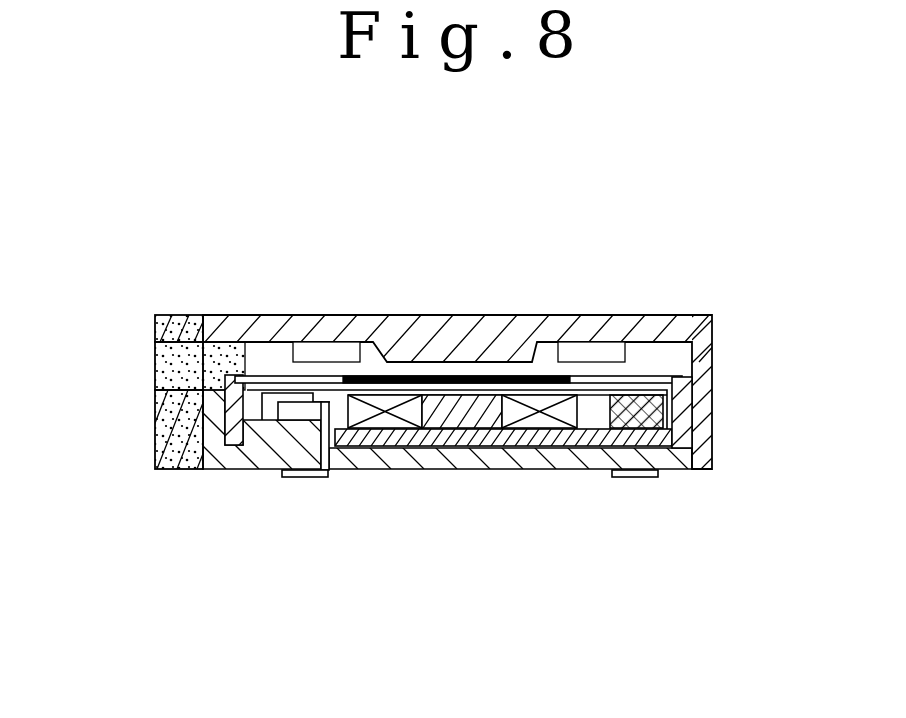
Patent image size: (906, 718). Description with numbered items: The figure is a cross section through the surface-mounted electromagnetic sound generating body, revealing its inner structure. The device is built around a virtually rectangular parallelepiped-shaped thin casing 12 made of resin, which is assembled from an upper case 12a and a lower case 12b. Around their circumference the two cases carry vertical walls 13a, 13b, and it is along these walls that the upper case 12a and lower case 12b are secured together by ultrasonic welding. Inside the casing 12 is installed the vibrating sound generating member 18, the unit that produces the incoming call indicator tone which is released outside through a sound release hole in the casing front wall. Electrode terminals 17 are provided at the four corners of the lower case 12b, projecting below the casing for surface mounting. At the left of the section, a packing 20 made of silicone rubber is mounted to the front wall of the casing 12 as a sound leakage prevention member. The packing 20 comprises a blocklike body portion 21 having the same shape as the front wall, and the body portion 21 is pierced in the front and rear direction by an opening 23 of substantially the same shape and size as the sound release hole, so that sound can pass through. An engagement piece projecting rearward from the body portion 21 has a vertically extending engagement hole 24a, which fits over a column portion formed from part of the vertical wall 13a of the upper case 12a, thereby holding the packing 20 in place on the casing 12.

The casing 12 is at (391, 387).
The upper case 12a is at (560, 316).
The lower case 12b is at (497, 472).
The vertical wall 13a is at (713, 366).
The vertical wall 13b is at (713, 436).
The electrode terminal 17 is at (305, 478).
The vibrating sound generating member 18 is at (648, 376).
The packing 20 is at (158, 334).
The body portion 21 is at (153, 432).
The opening 23 is at (153, 368).
The engagement hole 24a is at (232, 362).